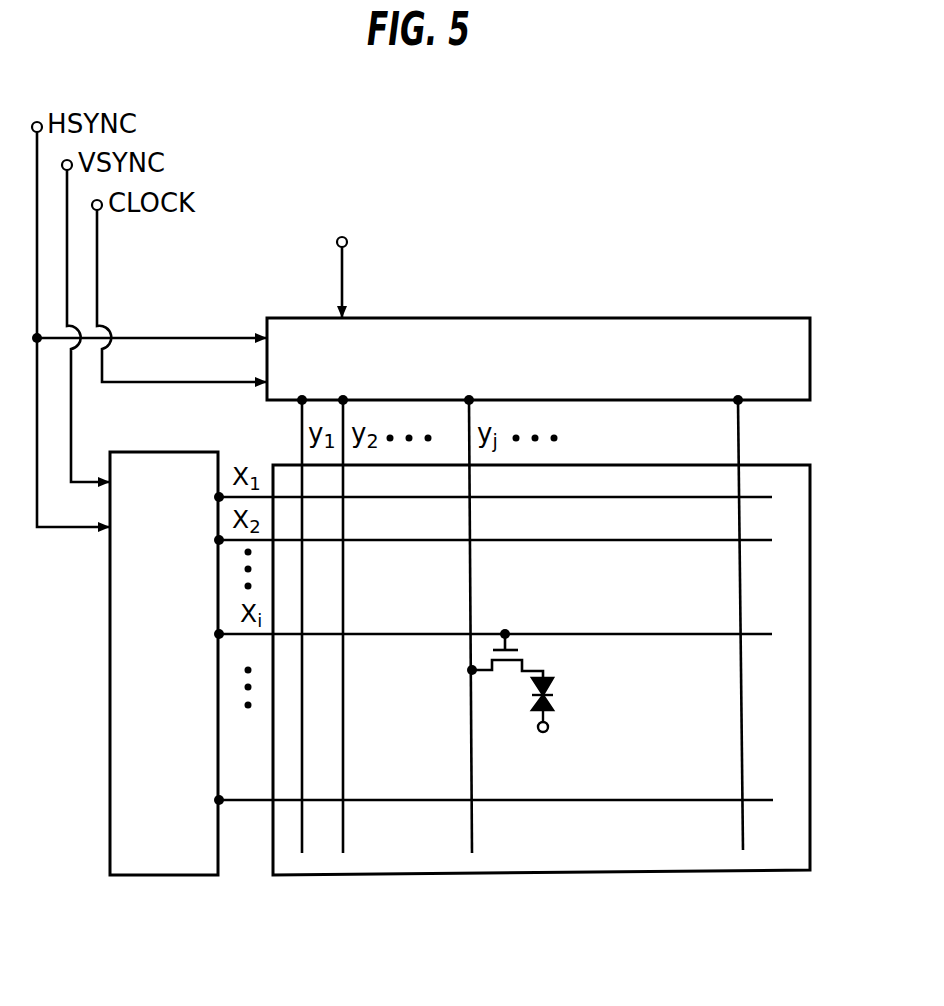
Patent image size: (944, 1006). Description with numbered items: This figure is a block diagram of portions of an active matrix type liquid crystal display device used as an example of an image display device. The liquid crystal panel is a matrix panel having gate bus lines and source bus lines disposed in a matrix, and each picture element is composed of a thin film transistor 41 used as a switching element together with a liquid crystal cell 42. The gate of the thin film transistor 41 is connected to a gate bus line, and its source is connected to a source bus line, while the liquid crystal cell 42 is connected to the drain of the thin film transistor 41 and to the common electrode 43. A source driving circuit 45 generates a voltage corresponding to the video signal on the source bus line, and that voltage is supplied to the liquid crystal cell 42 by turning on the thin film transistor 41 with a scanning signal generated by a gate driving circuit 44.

The thin film transistor 41 is at (528, 648).
The liquid crystal cell 42 is at (553, 702).
The common electrode 43 is at (546, 732).
The gate driving circuit 44 is at (110, 653).
The source driving circuit 45 is at (498, 318).